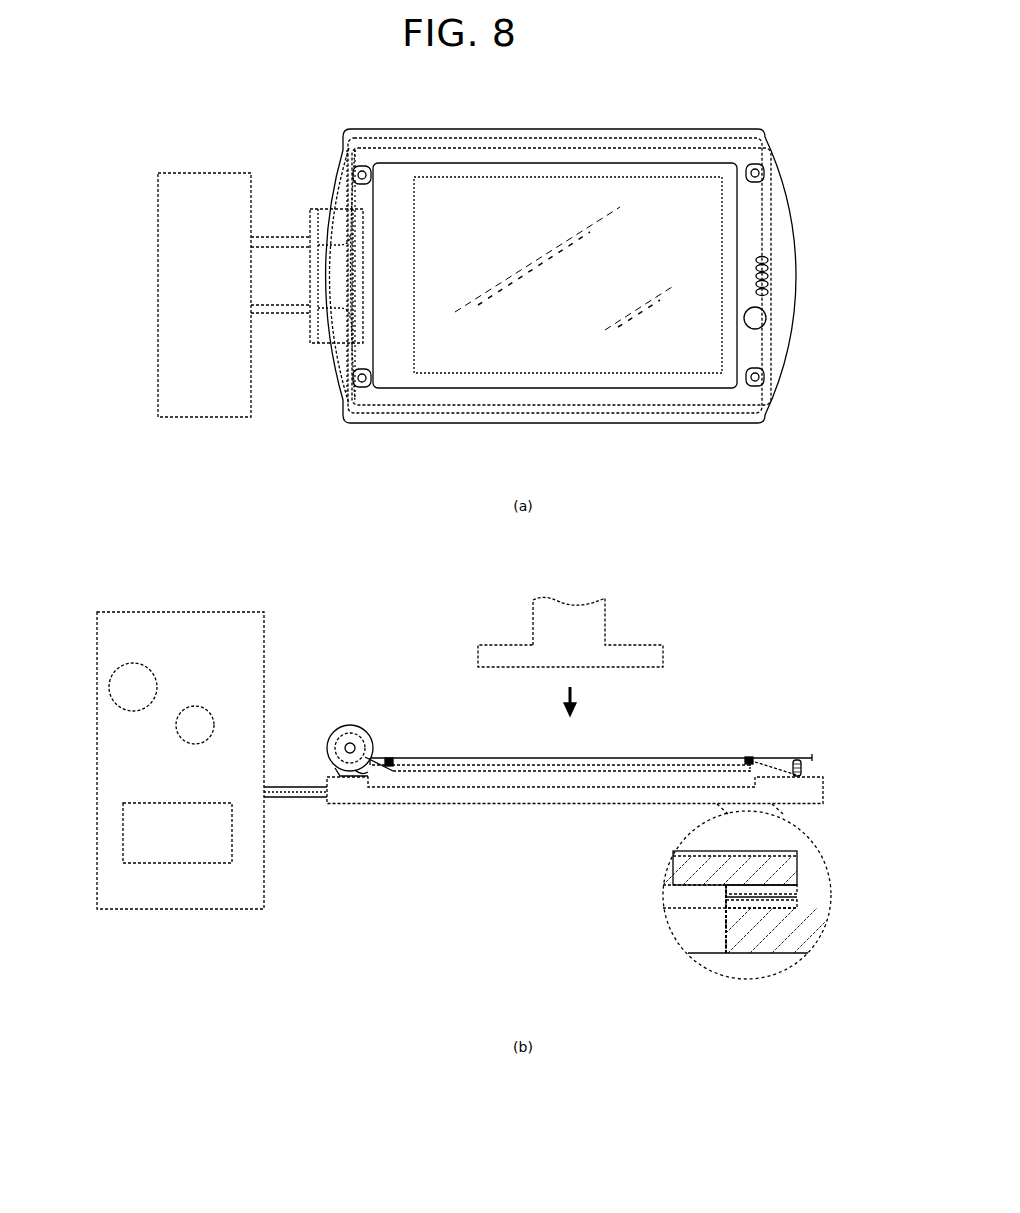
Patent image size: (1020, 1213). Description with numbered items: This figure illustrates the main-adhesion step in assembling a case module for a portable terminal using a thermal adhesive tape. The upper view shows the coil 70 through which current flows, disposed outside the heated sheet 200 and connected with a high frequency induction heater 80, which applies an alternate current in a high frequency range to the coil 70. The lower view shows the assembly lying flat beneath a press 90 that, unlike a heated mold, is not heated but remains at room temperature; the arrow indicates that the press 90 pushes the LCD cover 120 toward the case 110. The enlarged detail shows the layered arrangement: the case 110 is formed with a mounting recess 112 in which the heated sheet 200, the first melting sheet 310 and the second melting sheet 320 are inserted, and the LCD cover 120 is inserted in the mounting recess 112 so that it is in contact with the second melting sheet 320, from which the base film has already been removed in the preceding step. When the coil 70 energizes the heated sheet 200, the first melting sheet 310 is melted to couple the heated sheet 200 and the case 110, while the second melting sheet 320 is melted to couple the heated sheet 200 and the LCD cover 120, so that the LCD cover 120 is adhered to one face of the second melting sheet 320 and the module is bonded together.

The coil 70 is at (422, 129).
The high frequency induction heater 80 is at (198, 275).
The press 90 is at (568, 620).
The case 110 is at (755, 935).
The mounting recess 112 is at (686, 856).
The LCD cover 120 is at (780, 870).
The heated sheet 200 is at (727, 898).
The first melting sheet 310 is at (725, 900).
The second melting sheet 320 is at (735, 880).